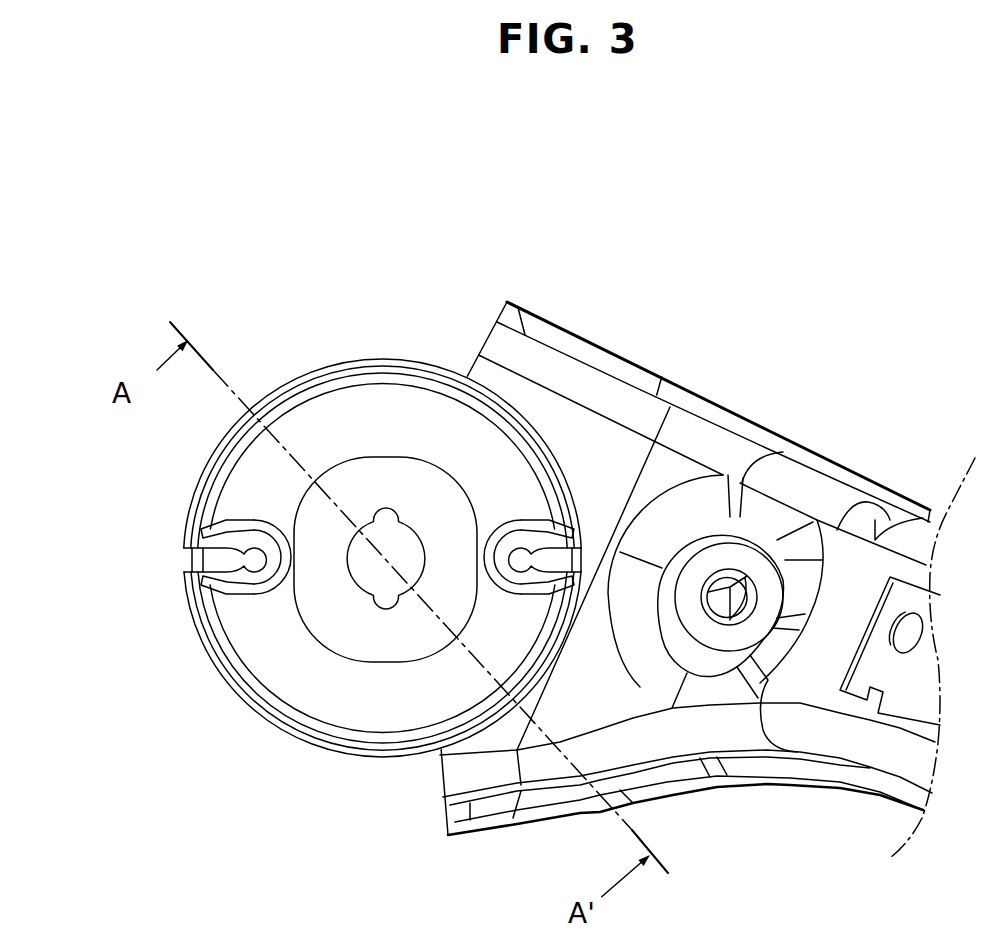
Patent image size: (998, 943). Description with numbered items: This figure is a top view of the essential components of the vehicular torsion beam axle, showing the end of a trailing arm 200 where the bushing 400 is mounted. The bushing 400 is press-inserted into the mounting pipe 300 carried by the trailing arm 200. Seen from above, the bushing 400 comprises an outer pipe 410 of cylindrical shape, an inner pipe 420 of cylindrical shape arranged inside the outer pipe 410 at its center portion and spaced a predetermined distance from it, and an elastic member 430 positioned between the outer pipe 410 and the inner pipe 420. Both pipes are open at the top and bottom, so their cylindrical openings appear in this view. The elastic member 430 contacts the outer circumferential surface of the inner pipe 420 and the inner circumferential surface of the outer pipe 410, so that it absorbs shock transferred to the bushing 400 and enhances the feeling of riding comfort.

The trailing arm 200 is at (730, 450).
The mounting pipe 300 is at (184, 561).
The bushing 400 is at (411, 332).
The outer pipe 410 is at (205, 582).
The inner pipe 420 is at (427, 485).
The elastic member 430 is at (350, 408).